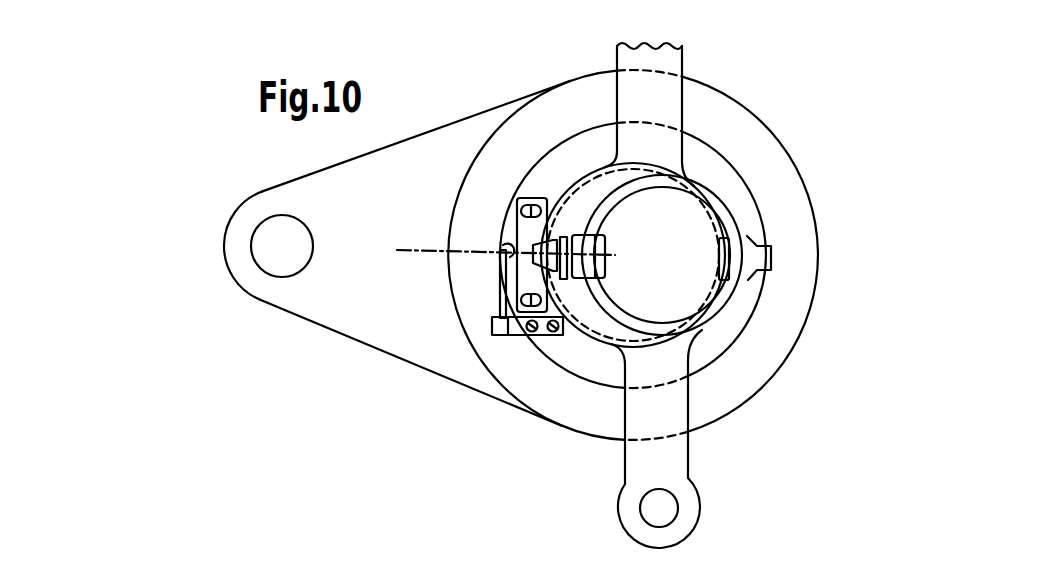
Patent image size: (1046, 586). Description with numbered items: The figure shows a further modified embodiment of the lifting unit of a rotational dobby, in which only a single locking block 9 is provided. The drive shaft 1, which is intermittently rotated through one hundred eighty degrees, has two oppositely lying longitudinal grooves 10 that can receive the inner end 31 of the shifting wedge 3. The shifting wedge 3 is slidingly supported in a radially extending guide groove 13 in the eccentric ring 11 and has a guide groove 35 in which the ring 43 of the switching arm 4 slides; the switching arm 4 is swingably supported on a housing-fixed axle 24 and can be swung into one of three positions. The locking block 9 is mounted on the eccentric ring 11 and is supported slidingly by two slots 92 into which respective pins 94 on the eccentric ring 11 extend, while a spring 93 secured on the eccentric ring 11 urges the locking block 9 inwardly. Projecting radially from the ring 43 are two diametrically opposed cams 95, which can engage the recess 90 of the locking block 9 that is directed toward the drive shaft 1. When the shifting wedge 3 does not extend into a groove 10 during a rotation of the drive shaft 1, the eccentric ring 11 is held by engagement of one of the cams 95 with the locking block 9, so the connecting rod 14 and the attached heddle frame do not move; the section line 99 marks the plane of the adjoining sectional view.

The drive shaft 1 is at (712, 222).
The shifting wedge 3 is at (579, 282).
The switching arm 4 is at (673, 103).
The locking block 9 is at (522, 233).
The longitudinal grooves 10 is at (723, 263).
The eccentric ring 11 is at (702, 357).
The radial guide groove 13 is at (590, 235).
The connecting rod 14 is at (436, 152).
The housing-fixed axle 24 is at (670, 508).
The inner end of shifting wedge 31 is at (580, 233).
The guide groove 35 is at (557, 240).
The ring of switching arm 43 is at (707, 183).
The recess 90 is at (535, 252).
The slots 92 is at (540, 203).
The spring 93 is at (498, 297).
The pins 94 is at (523, 203).
The cams 95 is at (767, 252).
The centre line 99 is at (421, 248).